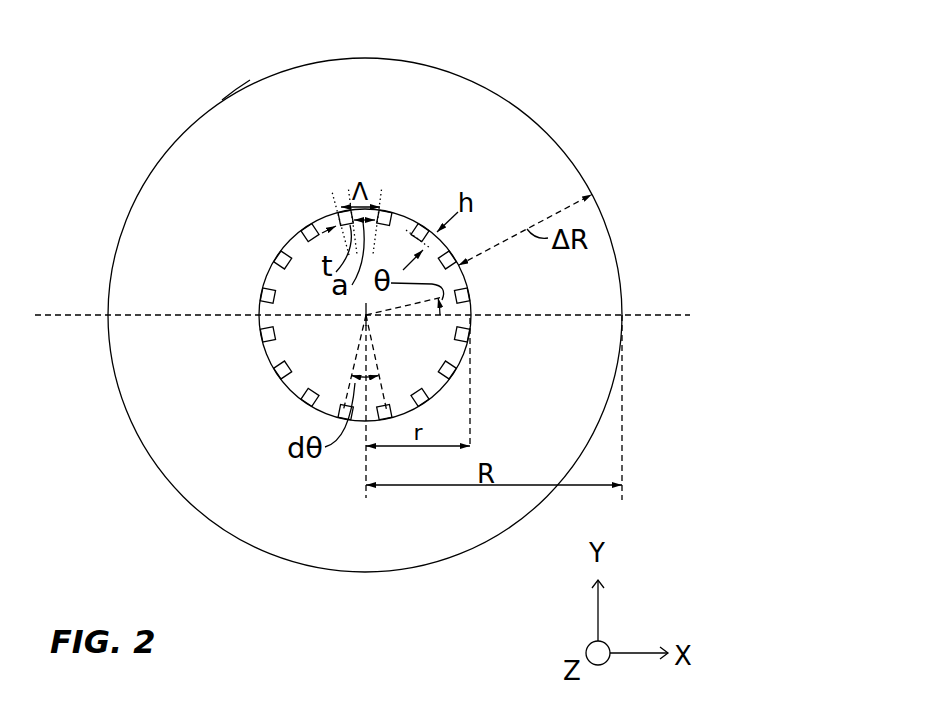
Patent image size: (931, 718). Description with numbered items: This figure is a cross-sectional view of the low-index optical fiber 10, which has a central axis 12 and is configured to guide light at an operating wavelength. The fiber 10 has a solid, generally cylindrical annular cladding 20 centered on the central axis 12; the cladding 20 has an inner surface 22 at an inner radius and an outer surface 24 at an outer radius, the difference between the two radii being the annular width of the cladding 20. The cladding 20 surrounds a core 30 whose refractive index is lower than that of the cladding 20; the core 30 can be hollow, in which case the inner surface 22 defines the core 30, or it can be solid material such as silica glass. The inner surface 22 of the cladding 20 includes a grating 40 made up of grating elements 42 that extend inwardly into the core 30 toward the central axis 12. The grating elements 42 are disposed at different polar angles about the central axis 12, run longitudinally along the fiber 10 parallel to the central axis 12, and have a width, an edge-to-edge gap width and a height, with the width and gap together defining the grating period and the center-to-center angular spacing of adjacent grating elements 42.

The low-index optical fiber 10 is at (588, 78).
The central axis 12 is at (364, 316).
The annular cladding 20 is at (222, 177).
The inner surface 22 is at (295, 245).
The outer surface 24 is at (222, 100).
The core 30 is at (305, 298).
The grating 40 is at (478, 291).
The grating elements 42 is at (260, 343).